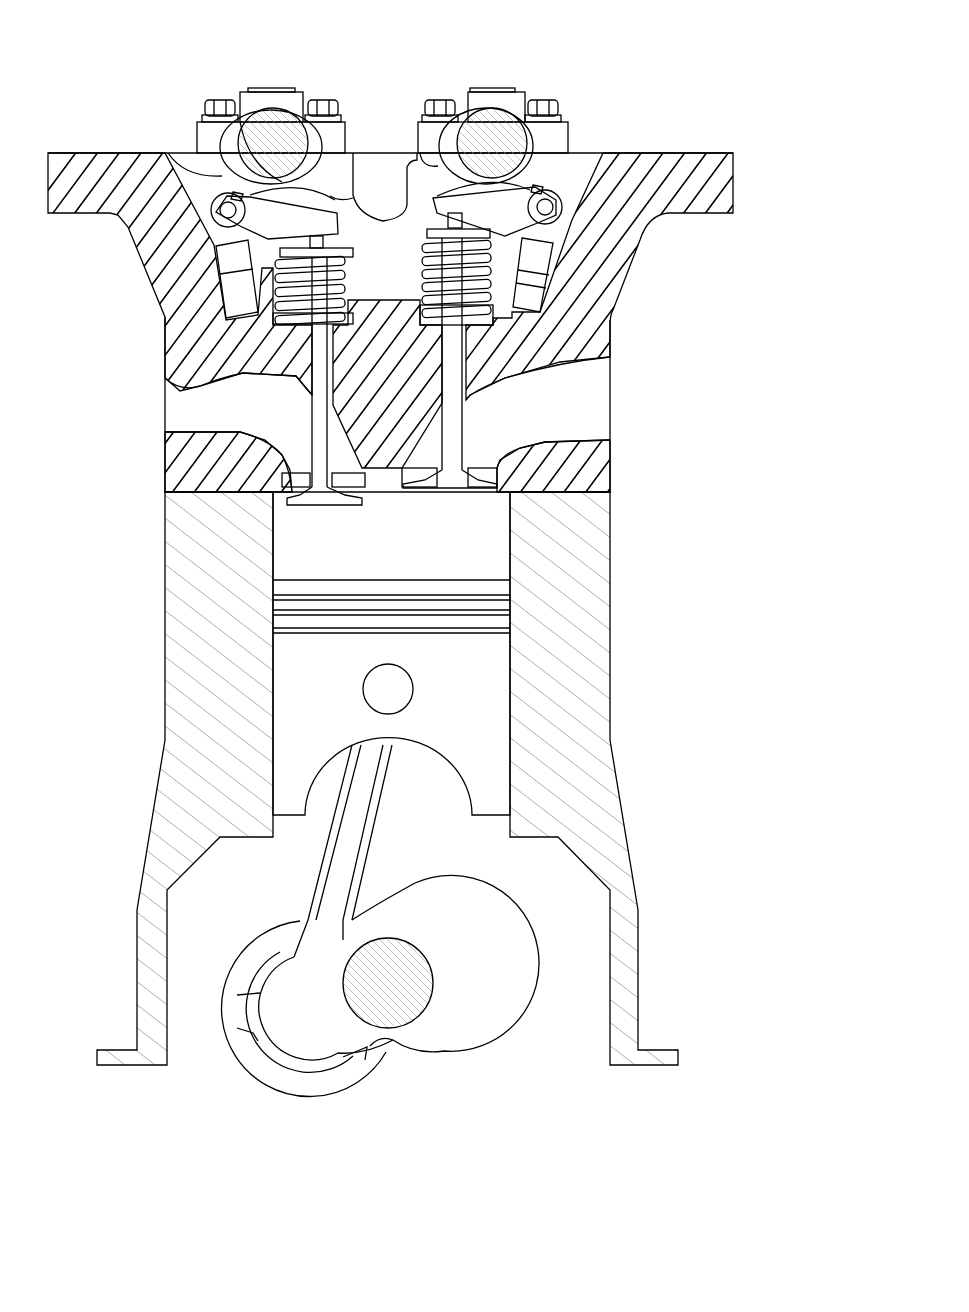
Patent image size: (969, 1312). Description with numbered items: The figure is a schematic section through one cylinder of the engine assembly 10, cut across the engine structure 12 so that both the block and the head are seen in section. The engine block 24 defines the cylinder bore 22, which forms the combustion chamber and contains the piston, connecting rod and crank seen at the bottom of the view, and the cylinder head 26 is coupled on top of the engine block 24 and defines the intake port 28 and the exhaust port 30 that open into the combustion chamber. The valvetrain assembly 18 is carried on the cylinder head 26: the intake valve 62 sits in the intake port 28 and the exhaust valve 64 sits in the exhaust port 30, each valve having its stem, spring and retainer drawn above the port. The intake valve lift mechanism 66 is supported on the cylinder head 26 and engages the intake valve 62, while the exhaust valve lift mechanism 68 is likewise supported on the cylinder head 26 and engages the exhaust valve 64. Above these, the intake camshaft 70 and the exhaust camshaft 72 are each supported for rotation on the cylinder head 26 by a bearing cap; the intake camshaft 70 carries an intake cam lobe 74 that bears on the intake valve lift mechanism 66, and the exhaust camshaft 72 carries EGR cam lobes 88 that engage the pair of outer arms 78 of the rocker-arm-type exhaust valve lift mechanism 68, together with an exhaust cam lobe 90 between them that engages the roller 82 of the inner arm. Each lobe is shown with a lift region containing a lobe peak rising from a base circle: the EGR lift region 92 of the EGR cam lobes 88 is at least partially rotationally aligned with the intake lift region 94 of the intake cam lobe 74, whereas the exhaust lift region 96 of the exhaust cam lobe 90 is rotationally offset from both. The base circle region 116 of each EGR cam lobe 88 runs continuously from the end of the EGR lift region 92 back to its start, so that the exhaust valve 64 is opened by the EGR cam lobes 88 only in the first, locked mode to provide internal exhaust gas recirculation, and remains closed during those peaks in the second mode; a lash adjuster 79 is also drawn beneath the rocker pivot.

The engine assembly 10 is at (80, 80).
The engine structure 12 is at (155, 492).
The valvetrain assembly 18 is at (565, 80).
The cylinder bore 22 is at (273, 565).
The engine block 24 is at (165, 584).
The cylinder head 26 is at (165, 282).
The intake port 28 is at (583, 358).
The exhaust port 30 is at (170, 388).
The intake valve 62 is at (430, 490).
The exhaust valve 64 is at (338, 502).
The intake valve lift mechanism 66 is at (415, 215).
The exhaust valve lift mechanism 68 is at (340, 223).
The intake camshaft 70 is at (463, 105).
The exhaust camshaft 72 is at (238, 98).
The intake cam lobe 74 is at (510, 102).
The outer arm 78 is at (332, 197).
The hydraulic lash adjuster 79 is at (228, 222).
The roller 82 is at (240, 126).
The EGR cam lobe 88 is at (230, 228).
The exhaust cam lobe 90 is at (322, 136).
The EGR lift region 92 is at (215, 175).
The intake lift region 94 is at (425, 163).
The exhaust lift region 96 is at (343, 178).
The base circle region 116 is at (273, 108).